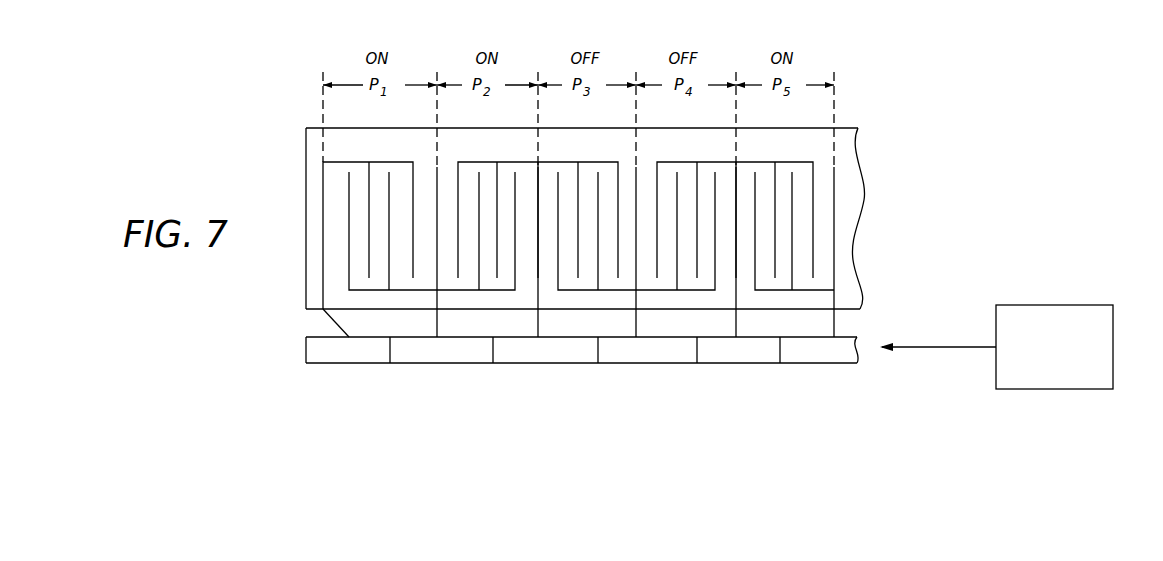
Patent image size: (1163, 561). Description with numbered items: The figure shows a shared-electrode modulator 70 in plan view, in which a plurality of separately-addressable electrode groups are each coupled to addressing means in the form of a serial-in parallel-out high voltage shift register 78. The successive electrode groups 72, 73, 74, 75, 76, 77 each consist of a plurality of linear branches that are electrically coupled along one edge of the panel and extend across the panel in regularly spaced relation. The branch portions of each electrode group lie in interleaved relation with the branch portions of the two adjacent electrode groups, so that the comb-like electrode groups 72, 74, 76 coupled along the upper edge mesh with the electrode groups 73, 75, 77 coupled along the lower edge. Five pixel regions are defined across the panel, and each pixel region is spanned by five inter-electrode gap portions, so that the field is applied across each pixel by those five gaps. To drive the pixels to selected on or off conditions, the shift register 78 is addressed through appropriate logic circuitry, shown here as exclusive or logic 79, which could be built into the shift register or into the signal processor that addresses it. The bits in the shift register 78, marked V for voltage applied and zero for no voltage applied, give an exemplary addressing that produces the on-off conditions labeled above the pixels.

The modulator 70 is at (868, 203).
The electrode group 72 is at (358, 161).
The electrode group 73 is at (490, 291).
The electrode group 74 is at (565, 161).
The electrode group 75 is at (687, 291).
The electrode group 76 is at (665, 161).
The electrode group 77 is at (779, 291).
The serial-in parallel-out high voltage shift register 78 is at (765, 363).
The exclusive or logic 79 is at (1113, 361).